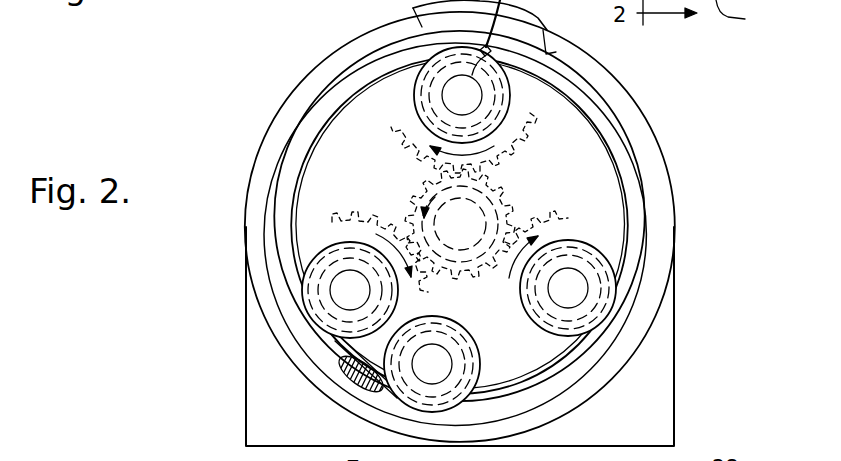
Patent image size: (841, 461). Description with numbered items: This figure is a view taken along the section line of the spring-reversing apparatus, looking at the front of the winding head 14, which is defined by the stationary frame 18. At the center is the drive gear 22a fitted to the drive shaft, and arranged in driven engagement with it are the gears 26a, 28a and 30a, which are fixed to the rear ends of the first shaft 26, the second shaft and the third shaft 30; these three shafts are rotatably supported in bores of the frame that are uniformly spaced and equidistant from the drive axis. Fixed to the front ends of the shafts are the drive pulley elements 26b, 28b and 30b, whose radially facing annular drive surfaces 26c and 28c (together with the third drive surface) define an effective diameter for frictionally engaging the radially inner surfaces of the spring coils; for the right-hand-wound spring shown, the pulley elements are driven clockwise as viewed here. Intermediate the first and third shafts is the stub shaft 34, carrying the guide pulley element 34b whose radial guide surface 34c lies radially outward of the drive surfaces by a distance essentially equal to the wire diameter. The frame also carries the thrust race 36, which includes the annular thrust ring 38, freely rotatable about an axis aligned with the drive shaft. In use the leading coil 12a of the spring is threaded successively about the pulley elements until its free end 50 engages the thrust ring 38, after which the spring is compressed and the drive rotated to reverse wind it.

The leading coil 12a is at (413, 8).
The winding head 14 is at (677, 150).
The stationary frame 18 is at (646, 408).
The drive gear 22a is at (520, 175).
The first shaft 26 is at (297, 286).
The gear 26a is at (337, 212).
The drive pulley element 26b is at (327, 247).
The drive surface 26c is at (333, 262).
The gear 28a is at (534, 137).
The drive pulley element 28b is at (414, 104).
The drive surface 28c is at (496, 24).
The third shaft 30 is at (624, 279).
The gear 30a is at (550, 198).
The drive pulley element 30b is at (596, 245).
The stub shaft 34 is at (462, 347).
The guide pulley element 34b is at (480, 358).
The radial guide surface 34c is at (398, 393).
The thrust race 36 is at (745, 17).
The thrust ring 38 is at (646, 312).
The free end 50 is at (556, 47).